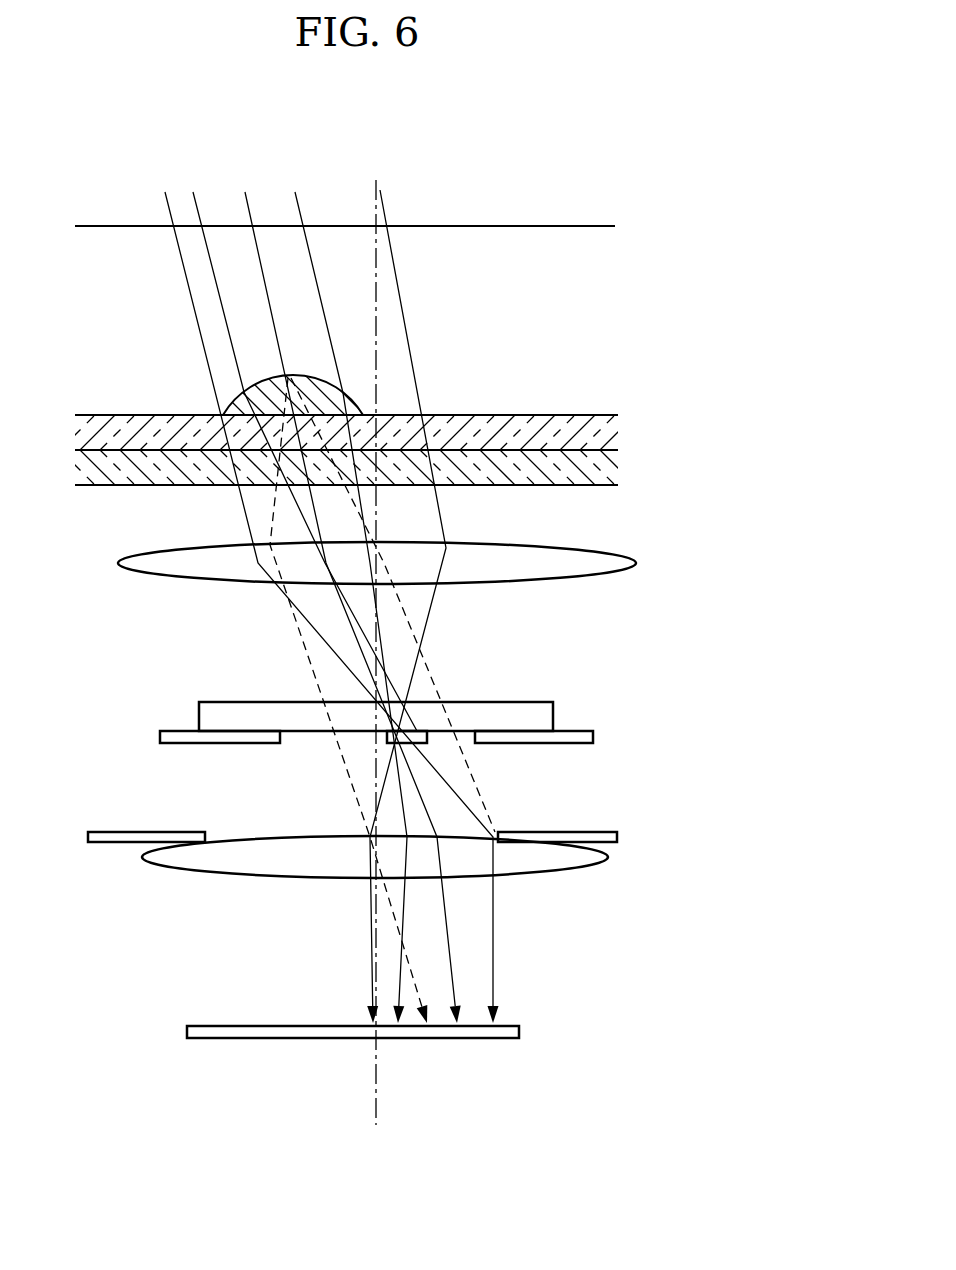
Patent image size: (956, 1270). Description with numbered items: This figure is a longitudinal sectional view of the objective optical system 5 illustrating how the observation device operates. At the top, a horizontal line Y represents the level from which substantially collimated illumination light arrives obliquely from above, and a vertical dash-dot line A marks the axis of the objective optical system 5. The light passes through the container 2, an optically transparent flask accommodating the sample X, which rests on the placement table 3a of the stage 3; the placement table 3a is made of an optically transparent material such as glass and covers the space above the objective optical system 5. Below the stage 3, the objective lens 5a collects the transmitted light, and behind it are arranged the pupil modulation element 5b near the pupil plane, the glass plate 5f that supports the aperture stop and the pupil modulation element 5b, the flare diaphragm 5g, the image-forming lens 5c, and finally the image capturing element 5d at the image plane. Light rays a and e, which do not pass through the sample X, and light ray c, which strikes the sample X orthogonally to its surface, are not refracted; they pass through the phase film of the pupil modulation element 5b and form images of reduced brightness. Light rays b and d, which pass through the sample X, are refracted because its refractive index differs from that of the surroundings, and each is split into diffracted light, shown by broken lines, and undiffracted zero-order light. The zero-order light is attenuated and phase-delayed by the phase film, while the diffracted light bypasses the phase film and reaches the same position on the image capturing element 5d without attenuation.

The container 2 is at (577, 402).
The stage 3 is at (327, 523).
The placement table 3a is at (108, 487).
The objective optical system 5 is at (370, 831).
The objective lens 5a is at (636, 563).
The pupil modulation element 5b is at (554, 712).
The image-forming lens 5c is at (208, 876).
The image capturing element 5d is at (242, 1038).
The glass plate 5f is at (593, 737).
The flare diaphragm 5g is at (617, 835).
The sample X is at (305, 372).
The reference plane Y is at (509, 224).
The optical axis A is at (375, 306).
The light ray a is at (326, 592).
The light ray b is at (299, 444).
The light ray c is at (346, 593).
The light ray d is at (347, 592).
The light ray e is at (406, 594).